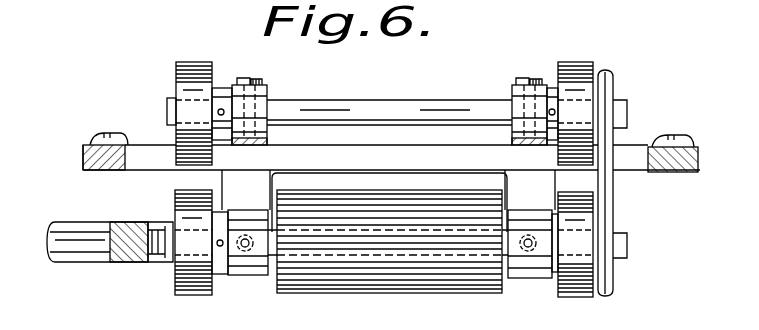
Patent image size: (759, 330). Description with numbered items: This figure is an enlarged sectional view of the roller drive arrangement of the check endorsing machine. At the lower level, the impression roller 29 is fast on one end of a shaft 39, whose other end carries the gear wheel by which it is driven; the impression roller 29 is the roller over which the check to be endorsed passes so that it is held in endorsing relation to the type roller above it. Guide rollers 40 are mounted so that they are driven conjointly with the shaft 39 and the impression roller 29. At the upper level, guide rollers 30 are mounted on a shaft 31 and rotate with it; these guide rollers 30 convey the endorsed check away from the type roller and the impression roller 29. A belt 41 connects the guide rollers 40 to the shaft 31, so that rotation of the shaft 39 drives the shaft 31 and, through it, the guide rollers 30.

The impression roller 29 is at (418, 294).
The guide rollers 30 is at (195, 62).
The shaft 31 is at (405, 100).
The shaft 39 is at (68, 225).
The guide rollers 40 is at (197, 296).
The belt 41 is at (613, 97).